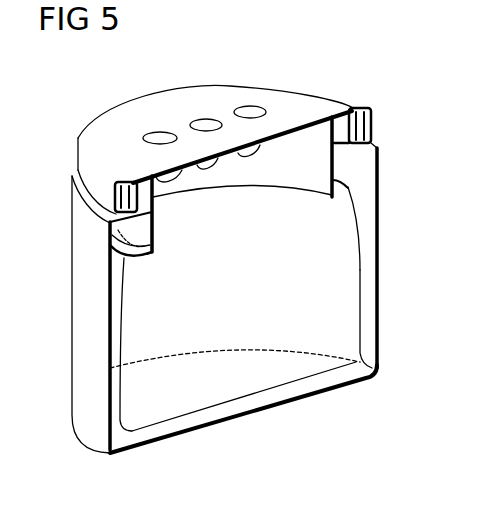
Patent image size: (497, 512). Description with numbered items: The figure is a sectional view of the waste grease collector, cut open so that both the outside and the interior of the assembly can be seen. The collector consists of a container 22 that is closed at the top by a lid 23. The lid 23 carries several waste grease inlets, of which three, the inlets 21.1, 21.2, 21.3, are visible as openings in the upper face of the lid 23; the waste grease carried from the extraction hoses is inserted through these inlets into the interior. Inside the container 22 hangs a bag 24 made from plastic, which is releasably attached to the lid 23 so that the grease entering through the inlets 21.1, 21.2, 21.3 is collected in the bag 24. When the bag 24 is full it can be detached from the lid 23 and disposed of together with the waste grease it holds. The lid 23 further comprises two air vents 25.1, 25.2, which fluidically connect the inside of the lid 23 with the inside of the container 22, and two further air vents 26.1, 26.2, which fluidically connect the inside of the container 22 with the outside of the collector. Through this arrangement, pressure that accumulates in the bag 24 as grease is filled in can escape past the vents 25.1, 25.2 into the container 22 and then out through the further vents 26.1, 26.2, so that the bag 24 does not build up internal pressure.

The waste grease inlet 21.1 is at (160, 137).
The waste grease inlet 21.2 is at (205, 125).
The waste grease inlet 21.3 is at (250, 112).
The container 22 is at (92, 425).
The lid 23 is at (298, 95).
The bag 24 is at (263, 388).
The air vent 25.1 is at (157, 238).
The air vent 25.2 is at (337, 168).
The further air vent 26.1 is at (132, 181).
The further air vent 26.2 is at (353, 107).